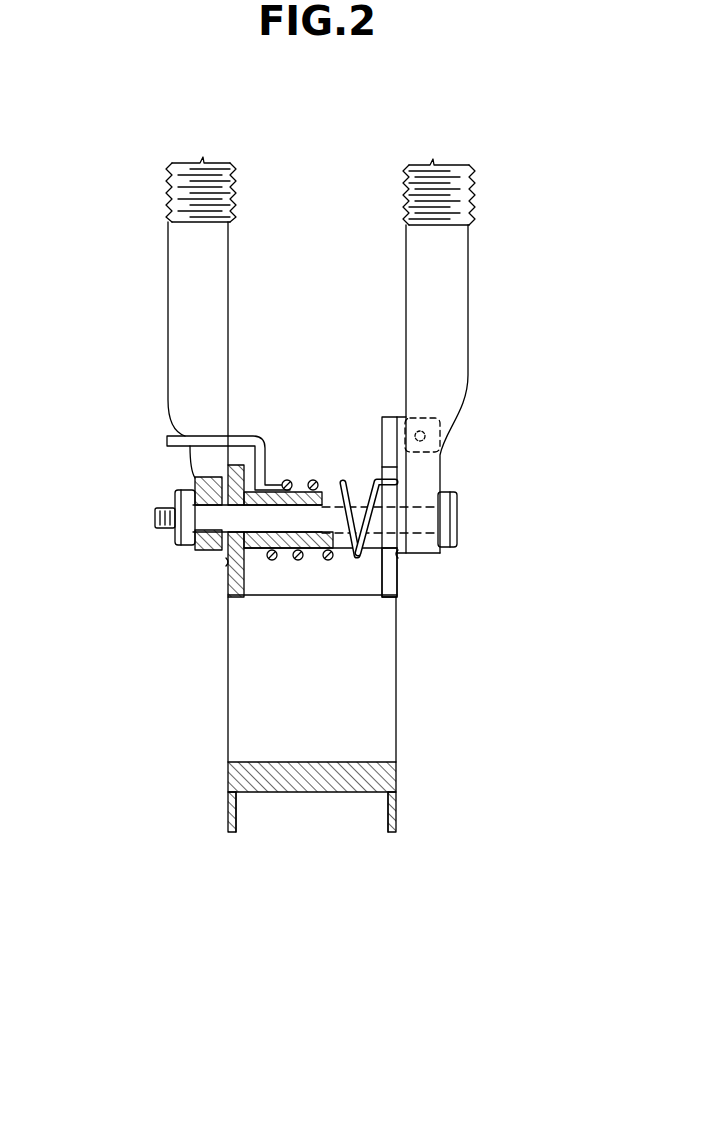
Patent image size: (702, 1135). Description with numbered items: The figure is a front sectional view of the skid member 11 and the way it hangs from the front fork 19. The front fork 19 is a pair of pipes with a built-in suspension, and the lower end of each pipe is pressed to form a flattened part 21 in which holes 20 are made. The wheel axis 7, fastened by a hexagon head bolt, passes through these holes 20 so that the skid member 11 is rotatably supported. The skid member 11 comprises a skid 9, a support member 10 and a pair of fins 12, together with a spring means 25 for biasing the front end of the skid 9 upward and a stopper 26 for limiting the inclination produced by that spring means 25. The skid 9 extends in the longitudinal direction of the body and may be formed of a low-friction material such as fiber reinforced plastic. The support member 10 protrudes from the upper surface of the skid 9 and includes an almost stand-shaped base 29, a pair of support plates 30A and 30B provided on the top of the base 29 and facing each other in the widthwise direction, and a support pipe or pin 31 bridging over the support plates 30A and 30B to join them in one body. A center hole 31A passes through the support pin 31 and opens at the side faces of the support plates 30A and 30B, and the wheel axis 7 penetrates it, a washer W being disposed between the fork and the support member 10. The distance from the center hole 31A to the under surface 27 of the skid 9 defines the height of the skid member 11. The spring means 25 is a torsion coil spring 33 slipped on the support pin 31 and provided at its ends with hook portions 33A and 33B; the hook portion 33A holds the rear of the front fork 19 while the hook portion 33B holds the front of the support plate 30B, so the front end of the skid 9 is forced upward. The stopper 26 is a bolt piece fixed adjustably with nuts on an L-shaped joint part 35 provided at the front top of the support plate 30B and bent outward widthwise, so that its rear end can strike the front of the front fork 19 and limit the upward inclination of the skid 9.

The front fork 19 is at (173, 285).
The flattened part 21 is at (190, 474).
The holes 20 is at (175, 503).
The wheel axis 7 is at (200, 545).
The support plate 30A is at (236, 590).
The support plate 30B is at (392, 582).
The support pipe or pin 31 is at (280, 560).
The center hole 31A is at (310, 558).
The torsion coil spring 33 is at (304, 440).
The hook portion 33A is at (385, 478).
The hook portion 33B is at (213, 436).
The spring means 25 is at (307, 440).
The stopper 26 is at (395, 412).
The under surface 27 is at (438, 446).
The L-shaped joint part 35 is at (433, 422).
The washer W is at (226, 566).
The base 29 is at (397, 658).
The support member 10 is at (388, 679).
The skid 9 is at (372, 760).
The skid member 11 is at (378, 766).
The fins 12 is at (393, 832).